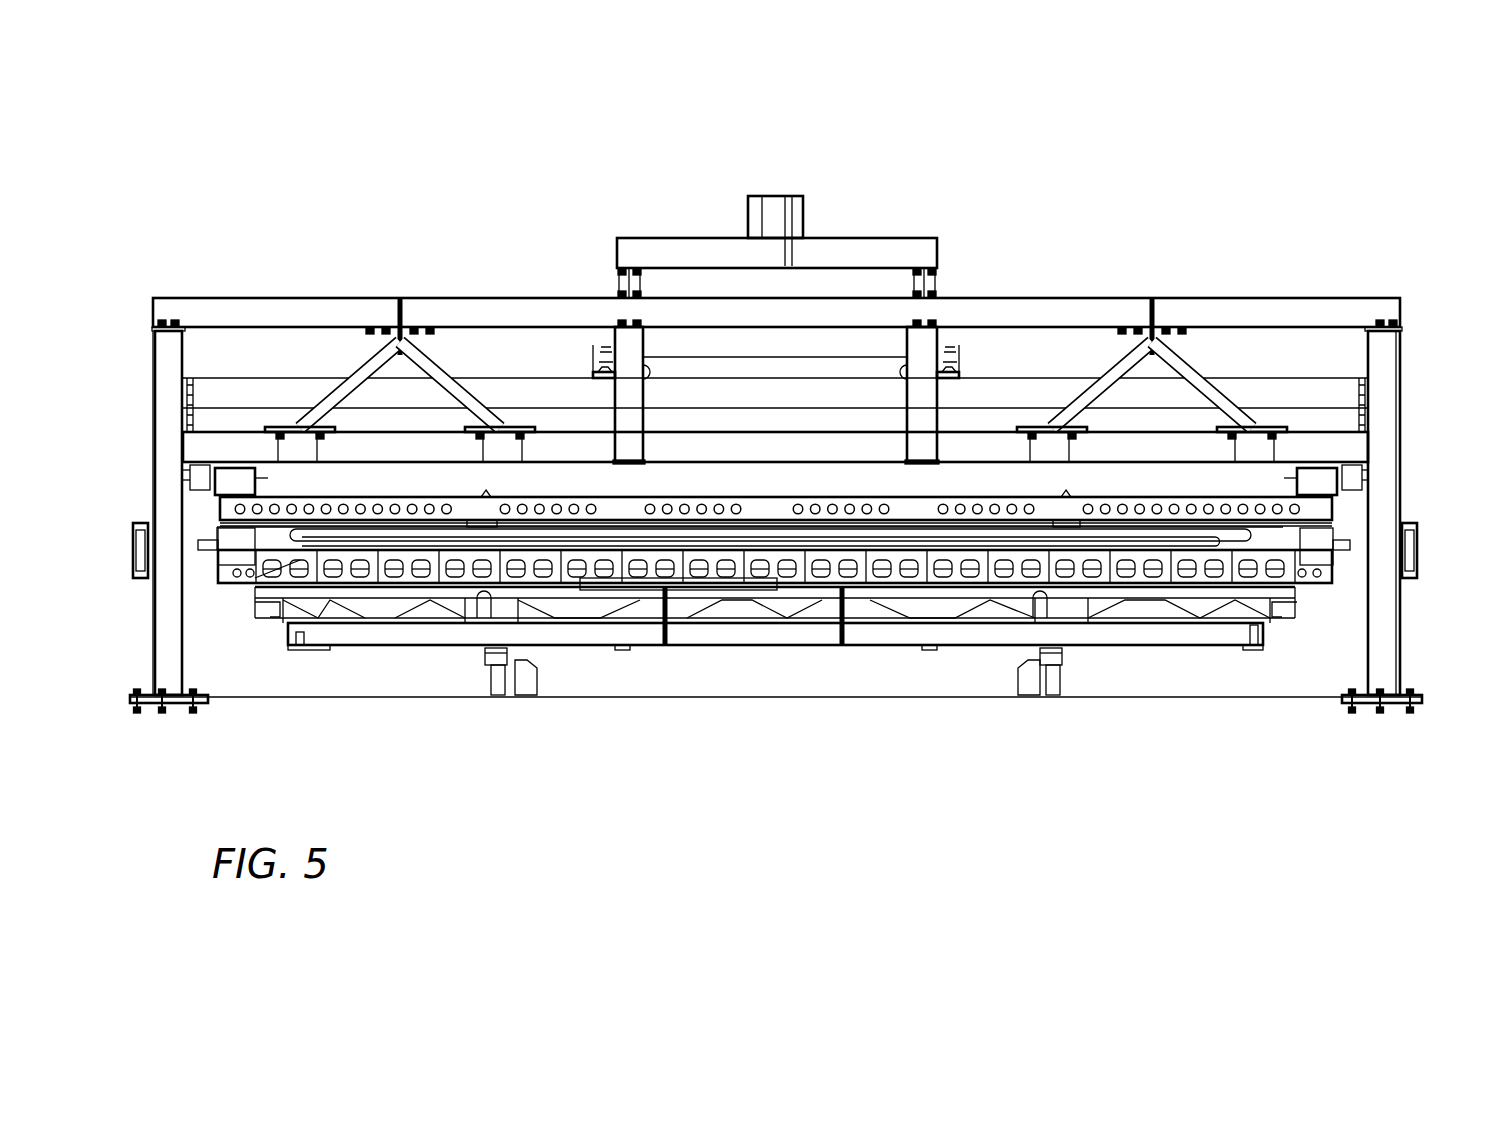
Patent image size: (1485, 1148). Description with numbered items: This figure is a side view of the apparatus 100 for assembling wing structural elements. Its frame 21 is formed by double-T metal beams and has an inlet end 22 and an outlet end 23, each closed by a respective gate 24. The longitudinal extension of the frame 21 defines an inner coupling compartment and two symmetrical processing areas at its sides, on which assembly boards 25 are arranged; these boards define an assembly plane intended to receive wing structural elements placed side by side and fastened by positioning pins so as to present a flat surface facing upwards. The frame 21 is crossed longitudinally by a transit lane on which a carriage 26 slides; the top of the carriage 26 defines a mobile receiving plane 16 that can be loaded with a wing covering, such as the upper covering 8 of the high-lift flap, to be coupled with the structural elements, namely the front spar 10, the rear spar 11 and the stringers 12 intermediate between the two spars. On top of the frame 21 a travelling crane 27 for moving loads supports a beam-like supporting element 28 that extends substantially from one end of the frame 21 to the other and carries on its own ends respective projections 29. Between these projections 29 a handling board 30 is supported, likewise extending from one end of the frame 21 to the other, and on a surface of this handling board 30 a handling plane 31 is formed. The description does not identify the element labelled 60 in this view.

The apparatus 100 is at (277, 159).
The frame 21 is at (467, 313).
The inlet end 22 is at (136, 423).
The outlet end 23 is at (1430, 334).
The gate 24 is at (135, 560).
The assembly board 25 is at (237, 578).
The carriage 26 is at (1177, 627).
The travelling crane 27 is at (670, 338).
The supporting element 28 is at (543, 385).
The projection 29 is at (190, 420).
The handling board 30 is at (610, 512).
The handling plane 31 is at (1065, 527).
The upper covering 8 is at (340, 535).
The front spar 10 is at (775, 658).
The rear spar 11 is at (775, 658).
The stringer 12 is at (463, 535).
The mobile receiving plane 16 is at (1020, 583).
The bottom beam 60 is at (915, 640).